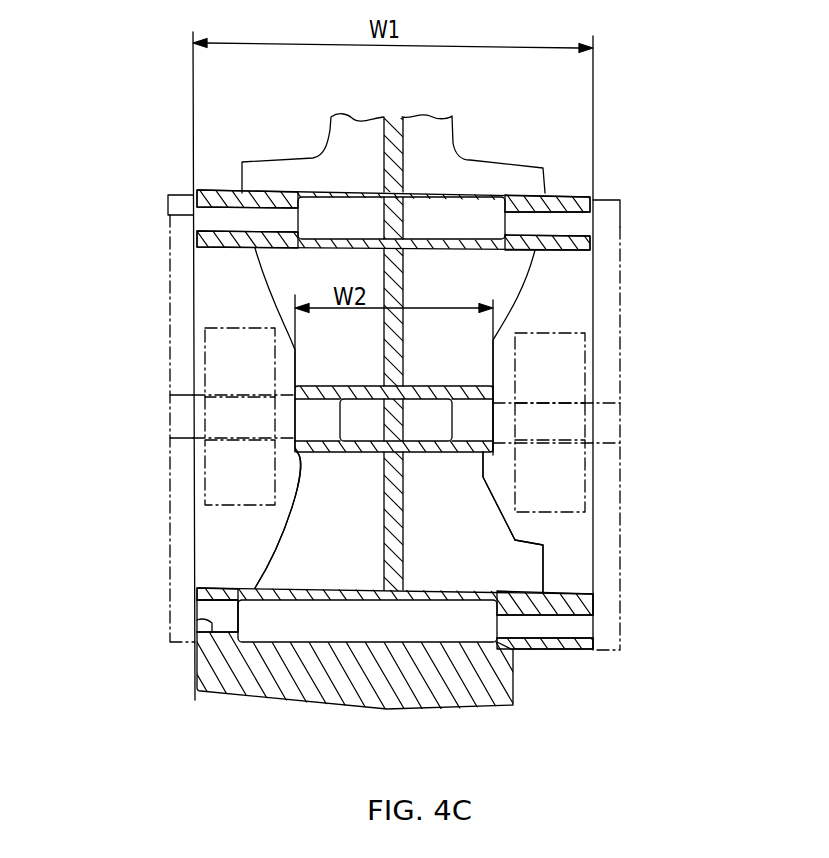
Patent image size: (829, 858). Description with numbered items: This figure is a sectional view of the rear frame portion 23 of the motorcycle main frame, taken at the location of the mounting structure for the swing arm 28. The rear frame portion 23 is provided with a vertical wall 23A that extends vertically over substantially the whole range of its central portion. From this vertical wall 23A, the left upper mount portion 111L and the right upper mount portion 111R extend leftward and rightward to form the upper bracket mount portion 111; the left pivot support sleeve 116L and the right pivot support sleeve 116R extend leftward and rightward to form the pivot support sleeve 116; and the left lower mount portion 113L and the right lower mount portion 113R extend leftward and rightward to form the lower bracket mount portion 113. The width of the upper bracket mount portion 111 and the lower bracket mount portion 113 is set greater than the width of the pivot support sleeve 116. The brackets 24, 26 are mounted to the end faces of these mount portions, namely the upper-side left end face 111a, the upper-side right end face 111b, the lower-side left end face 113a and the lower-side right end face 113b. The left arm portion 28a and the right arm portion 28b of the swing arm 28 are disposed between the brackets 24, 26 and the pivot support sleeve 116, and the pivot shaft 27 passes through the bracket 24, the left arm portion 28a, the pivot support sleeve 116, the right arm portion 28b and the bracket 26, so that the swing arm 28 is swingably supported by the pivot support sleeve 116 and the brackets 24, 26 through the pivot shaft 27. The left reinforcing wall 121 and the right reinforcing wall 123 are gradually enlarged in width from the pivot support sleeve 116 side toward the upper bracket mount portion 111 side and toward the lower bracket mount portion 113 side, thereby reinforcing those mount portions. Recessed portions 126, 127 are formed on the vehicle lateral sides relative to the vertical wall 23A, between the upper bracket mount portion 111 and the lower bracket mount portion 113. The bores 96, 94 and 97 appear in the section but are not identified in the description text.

The rear frame portion 23 is at (236, 176).
The vertical wall 23A is at (382, 143).
The upper bracket mount portion 111 is at (557, 193).
The upper-side left end face 111a is at (197, 195).
The upper-side right end face 111b is at (590, 203).
The left upper mount portion 111L is at (210, 255).
The right upper mount portion 111R is at (570, 197).
The upper bearing 96 is at (215, 222).
The pivot support sleeve 116 is at (470, 372).
The left pivot support sleeve 116L is at (330, 386).
The right pivot support sleeve 116R is at (440, 386).
The middle bearing 94 is at (302, 427).
The left reinforcing wall 121 is at (290, 535).
The lower bracket mount portion 113 is at (557, 590).
The left lower mount portion 113L is at (217, 590).
The right lower mount portion 113R is at (573, 593).
The lower-side left end face 113a is at (203, 598).
The lower-side right end face 113b is at (595, 607).
The lower bearing 97 is at (205, 620).
The recessed portion 126 is at (332, 548).
The recessed portion 127 is at (433, 545).
The right reinforcing wall 123 is at (490, 563).
The bracket 24 is at (167, 307).
The bracket 26 is at (621, 363).
The pivot shaft 27 is at (187, 395).
The swing arm 28 is at (232, 323).
The left arm portion 28a is at (205, 474).
The right arm portion 28b is at (585, 465).